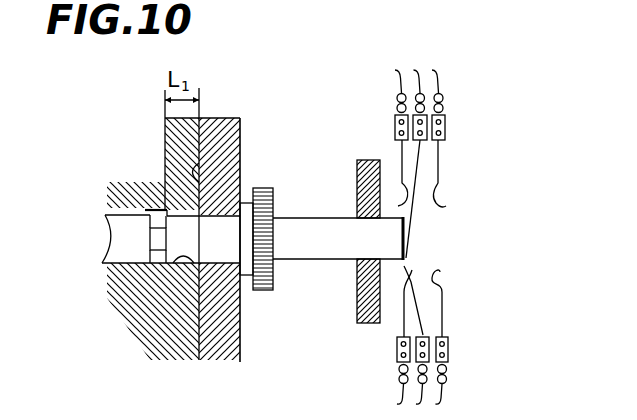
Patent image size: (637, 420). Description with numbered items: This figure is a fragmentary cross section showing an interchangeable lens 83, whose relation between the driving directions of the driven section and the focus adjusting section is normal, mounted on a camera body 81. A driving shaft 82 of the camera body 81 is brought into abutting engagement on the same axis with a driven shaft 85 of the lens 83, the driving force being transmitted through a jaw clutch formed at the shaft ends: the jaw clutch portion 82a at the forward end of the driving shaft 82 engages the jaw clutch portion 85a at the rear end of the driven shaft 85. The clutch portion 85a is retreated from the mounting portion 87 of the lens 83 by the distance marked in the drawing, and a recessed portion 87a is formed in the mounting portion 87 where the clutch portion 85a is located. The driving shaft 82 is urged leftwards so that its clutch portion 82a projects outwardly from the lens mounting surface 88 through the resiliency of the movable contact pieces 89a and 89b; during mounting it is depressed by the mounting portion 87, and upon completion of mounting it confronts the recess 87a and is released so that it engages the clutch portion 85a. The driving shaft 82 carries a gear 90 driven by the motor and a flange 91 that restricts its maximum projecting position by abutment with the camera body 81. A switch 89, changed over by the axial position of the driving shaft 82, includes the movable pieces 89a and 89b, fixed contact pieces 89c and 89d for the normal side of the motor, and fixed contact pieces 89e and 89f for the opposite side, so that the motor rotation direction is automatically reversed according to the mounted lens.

The camera body 81 is at (234, 115).
The driving shaft 82 is at (320, 250).
The jaw clutch portion 82a is at (150, 228).
The interchangeable lens 83 is at (153, 117).
The driven shaft 85 is at (115, 245).
The jaw clutch portion 85a is at (172, 263).
The mounting portion 87 is at (201, 142).
The recessed portion 87a is at (194, 266).
The lens mounting surface 88 is at (200, 189).
The switch 89 is at (452, 299).
The movable contact piece 89a is at (412, 212).
The movable contact piece 89b is at (412, 267).
The fixed contact piece 89c is at (402, 152).
The fixed contact piece 89d is at (404, 323).
The fixed contact piece 89e is at (440, 168).
The fixed contact piece 89f is at (443, 325).
The gear 90 is at (272, 191).
The flange 91 is at (245, 265).